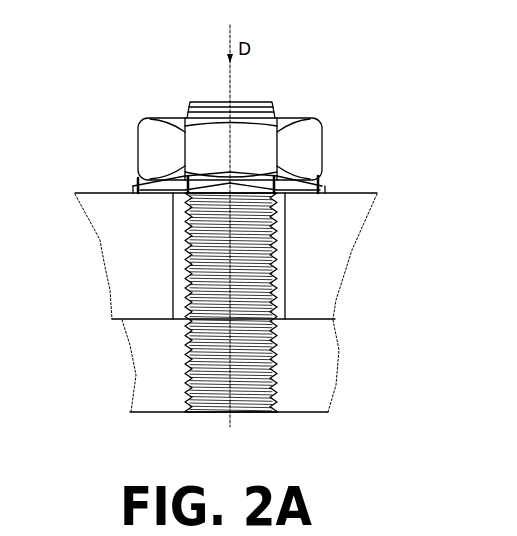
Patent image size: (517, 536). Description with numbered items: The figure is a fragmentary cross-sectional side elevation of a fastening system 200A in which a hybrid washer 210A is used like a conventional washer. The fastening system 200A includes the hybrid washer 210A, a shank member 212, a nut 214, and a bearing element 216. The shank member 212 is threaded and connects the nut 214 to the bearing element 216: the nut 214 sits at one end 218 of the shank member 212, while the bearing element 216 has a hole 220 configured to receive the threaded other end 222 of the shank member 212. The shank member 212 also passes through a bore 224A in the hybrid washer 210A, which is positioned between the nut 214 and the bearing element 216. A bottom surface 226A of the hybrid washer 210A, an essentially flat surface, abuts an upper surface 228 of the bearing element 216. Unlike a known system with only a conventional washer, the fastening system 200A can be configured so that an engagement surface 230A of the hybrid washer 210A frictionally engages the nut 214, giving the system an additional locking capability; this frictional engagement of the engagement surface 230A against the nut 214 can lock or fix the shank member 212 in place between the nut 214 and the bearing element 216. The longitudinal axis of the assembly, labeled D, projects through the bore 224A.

The fastening system 200A is at (333, 98).
The hybrid washer 210A is at (137, 188).
The nut 214 is at (315, 124).
The one end of the shank member 218 is at (202, 100).
The engagement surface 230A is at (320, 157).
The shank member 212 is at (262, 303).
The other end of the shank member 222 is at (205, 406).
The bottom surface of the hybrid washer 226A is at (232, 192).
The bearing element 216 is at (363, 216).
The upper surface of the bearing element 228 is at (90, 197).
The bore in the hybrid washer 224A is at (177, 208).
The hole 220 is at (185, 277).